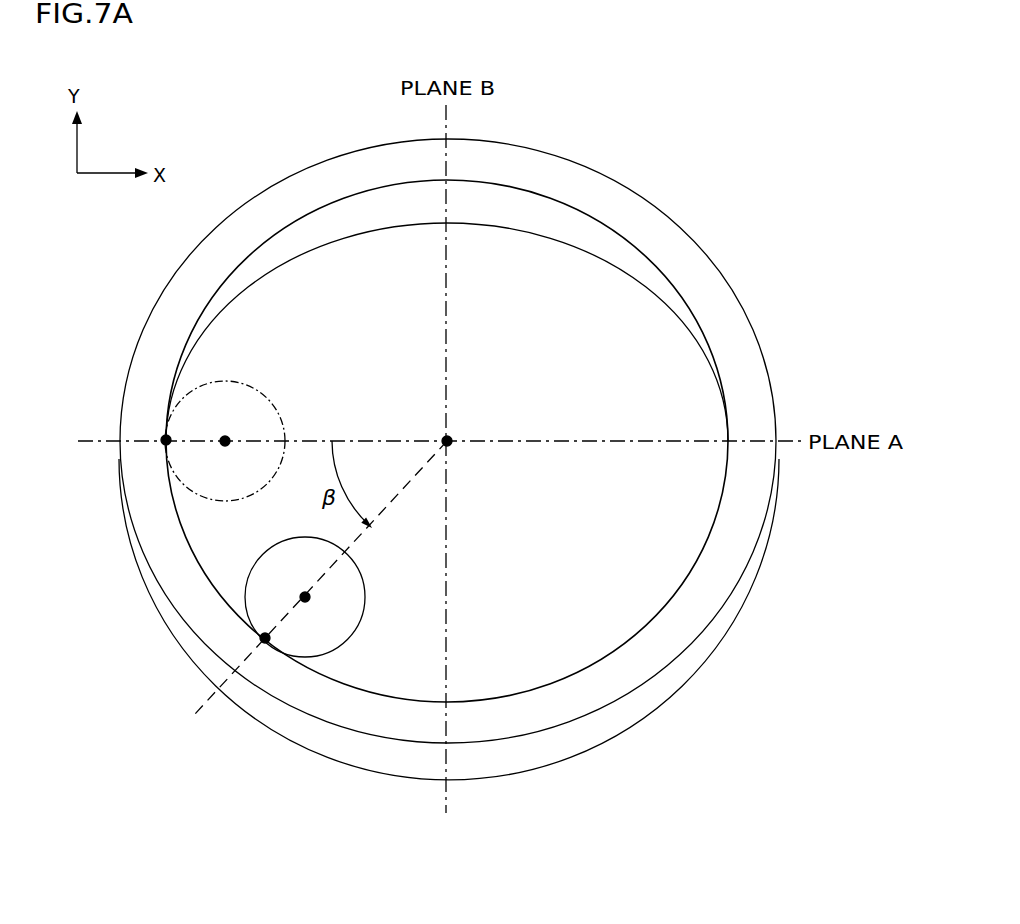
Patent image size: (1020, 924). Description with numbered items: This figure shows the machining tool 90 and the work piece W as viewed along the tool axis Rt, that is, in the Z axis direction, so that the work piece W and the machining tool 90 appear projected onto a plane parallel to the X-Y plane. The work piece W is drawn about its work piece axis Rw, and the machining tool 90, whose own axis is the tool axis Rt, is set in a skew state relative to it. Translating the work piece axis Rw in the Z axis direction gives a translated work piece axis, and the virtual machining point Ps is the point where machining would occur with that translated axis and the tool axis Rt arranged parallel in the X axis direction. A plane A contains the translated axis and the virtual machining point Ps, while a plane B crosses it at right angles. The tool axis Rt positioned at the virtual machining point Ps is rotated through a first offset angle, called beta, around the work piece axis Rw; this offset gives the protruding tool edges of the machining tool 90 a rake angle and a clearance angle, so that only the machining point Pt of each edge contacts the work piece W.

The machining tool 90 is at (250, 403).
The work piece W is at (575, 163).
The work piece axis Rw is at (450, 438).
The tool axis Rt is at (231, 438).
The virtual machining point Ps is at (161, 443).
The machining point Pt is at (262, 640).